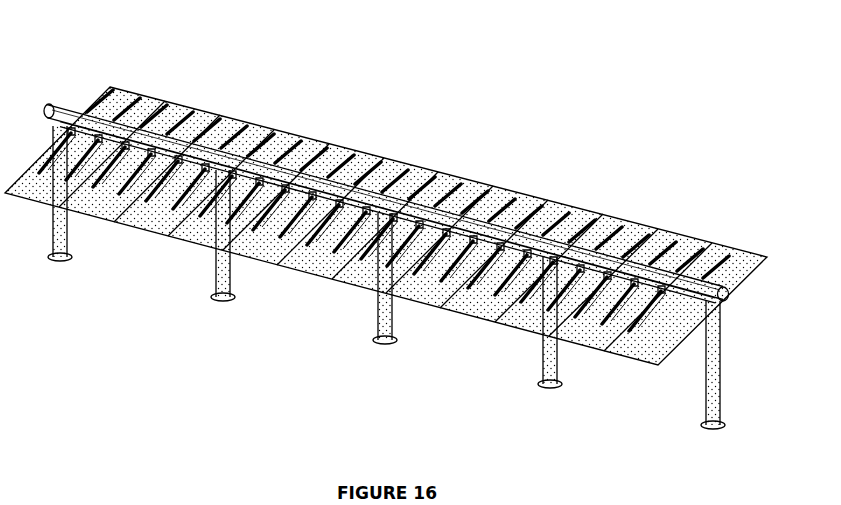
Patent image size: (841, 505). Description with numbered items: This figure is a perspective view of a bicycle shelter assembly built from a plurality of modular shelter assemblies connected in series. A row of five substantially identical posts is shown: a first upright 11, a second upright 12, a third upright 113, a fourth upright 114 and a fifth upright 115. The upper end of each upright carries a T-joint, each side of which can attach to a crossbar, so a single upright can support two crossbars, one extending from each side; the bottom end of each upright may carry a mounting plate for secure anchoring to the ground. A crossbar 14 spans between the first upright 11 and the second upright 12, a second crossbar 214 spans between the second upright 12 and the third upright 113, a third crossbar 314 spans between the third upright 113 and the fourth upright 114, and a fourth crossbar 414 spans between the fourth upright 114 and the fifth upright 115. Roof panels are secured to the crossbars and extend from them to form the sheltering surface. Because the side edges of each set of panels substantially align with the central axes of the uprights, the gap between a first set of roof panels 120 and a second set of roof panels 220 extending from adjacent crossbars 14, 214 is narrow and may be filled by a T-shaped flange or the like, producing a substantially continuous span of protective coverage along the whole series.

The first upright 11 is at (722, 384).
The second upright 12 is at (557, 366).
The third upright 113 is at (393, 322).
The fourth upright 114 is at (230, 290).
The fifth upright 115 is at (70, 253).
The crossbar 14 is at (770, 263).
The first set of roof panels 120 is at (767, 250).
The second set of roof panels 220 is at (493, 183).
The second crossbar 214 is at (503, 200).
The third crossbar 314 is at (327, 178).
The fourth crossbar 414 is at (170, 125).